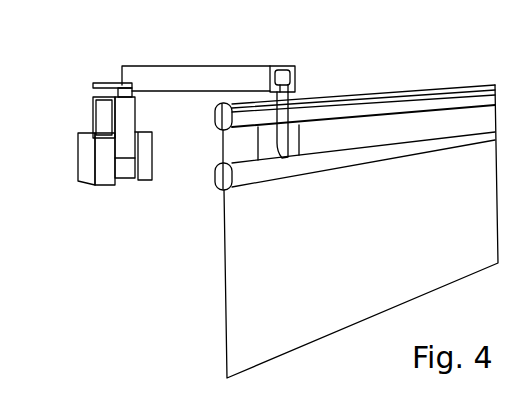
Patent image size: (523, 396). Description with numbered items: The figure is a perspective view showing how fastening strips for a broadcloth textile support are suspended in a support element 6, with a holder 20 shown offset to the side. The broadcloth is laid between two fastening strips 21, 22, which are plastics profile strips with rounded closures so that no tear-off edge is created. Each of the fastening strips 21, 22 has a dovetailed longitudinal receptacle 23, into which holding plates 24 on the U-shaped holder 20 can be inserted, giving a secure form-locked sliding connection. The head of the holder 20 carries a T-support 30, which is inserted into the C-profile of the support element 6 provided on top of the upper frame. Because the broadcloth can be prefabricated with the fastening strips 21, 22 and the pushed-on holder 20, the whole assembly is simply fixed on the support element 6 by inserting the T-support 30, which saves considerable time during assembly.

The support element 6 is at (276, 64).
The holder 20 is at (124, 122).
The fastening strip 21 is at (218, 116).
The fastening strip 22 is at (401, 98).
The dovetailed longitudinal receptacle 23 is at (233, 145).
The holding plate 24 is at (222, 170).
The T-support 30 is at (93, 86).